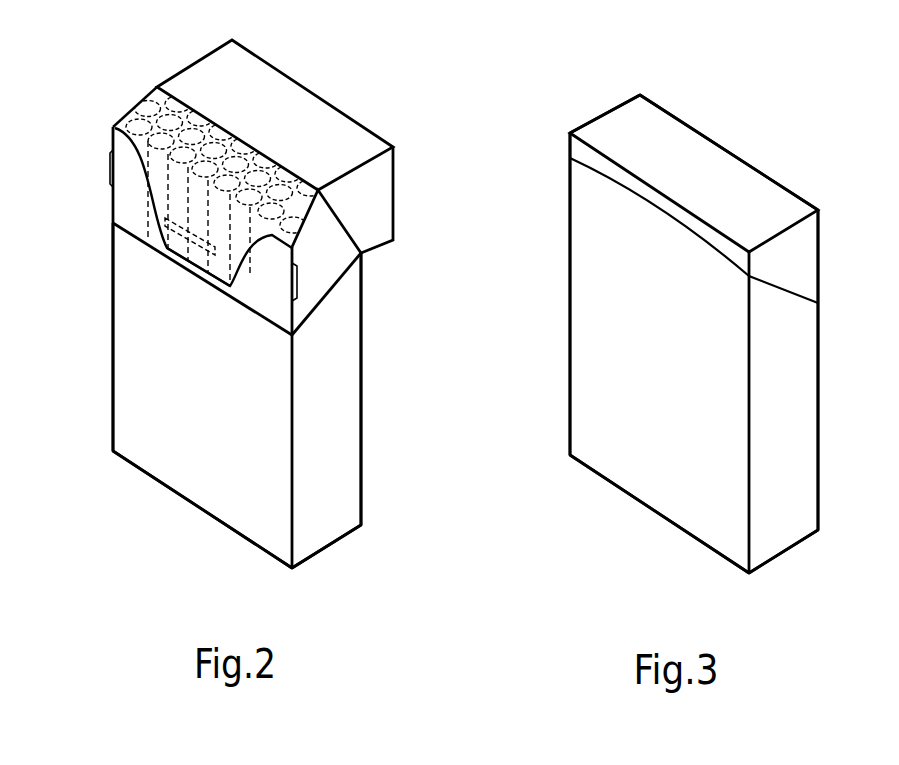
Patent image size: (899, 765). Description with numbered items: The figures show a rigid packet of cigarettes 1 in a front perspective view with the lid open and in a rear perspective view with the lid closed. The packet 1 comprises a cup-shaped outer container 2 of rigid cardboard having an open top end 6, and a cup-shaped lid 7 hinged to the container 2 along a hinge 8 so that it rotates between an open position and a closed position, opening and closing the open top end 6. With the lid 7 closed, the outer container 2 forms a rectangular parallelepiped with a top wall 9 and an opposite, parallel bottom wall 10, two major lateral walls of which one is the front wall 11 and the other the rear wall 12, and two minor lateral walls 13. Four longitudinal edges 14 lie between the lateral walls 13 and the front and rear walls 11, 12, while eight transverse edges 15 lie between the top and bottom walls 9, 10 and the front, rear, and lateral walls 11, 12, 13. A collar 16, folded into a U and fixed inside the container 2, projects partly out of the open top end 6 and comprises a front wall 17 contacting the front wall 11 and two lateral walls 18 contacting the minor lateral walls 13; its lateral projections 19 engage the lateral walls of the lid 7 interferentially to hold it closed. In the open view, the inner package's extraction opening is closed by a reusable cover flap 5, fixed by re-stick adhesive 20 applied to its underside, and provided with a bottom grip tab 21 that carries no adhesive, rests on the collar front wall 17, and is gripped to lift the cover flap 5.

In FIG. 2, the packet of cigarettes 1 is at (152, 493).
In FIG. 3, the packet of cigarettes 1 is at (600, 500).
In FIG. 2, the outer container 2 is at (372, 453).
In FIG. 3, the outer container 2 is at (837, 490).
In FIG. 2, the cover flap 5 is at (152, 196).
In FIG. 2, the open top end 6 is at (133, 108).
In FIG. 2, the lid 7 is at (255, 54).
In FIG. 3, the lid 7 is at (787, 190).
In FIG. 3, the hinge 8 is at (660, 220).
In FIG. 2, the top wall 9 is at (363, 117).
In FIG. 3, the top wall 9 is at (737, 173).
In FIG. 2, the bottom wall 10 is at (325, 562).
In FIG. 3, the bottom wall 10 is at (720, 577).
In FIG. 2, the front wall 11 is at (190, 478).
In FIG. 3, the rear wall 12 is at (642, 485).
In FIG. 2, the minor lateral wall 13 is at (327, 367).
In FIG. 3, the minor lateral wall 13 is at (805, 408).
In FIG. 2, the longitudinal edge 14 is at (113, 333).
In FIG. 3, the longitudinal edge 14 is at (570, 292).
In FIG. 2, the transverse edge 15 is at (225, 528).
In FIG. 3, the transverse edge 15 is at (637, 93).
In FIG. 2, the collar 16 is at (92, 170).
In FIG. 2, the front wall of collar 17 is at (270, 307).
In FIG. 2, the lateral wall of collar 18 is at (317, 260).
In FIG. 2, the lateral projection 19 is at (110, 160).
In FIG. 2, the re-stick adhesive 20 is at (167, 239).
In FIG. 2, the grip tab 21 is at (183, 252).